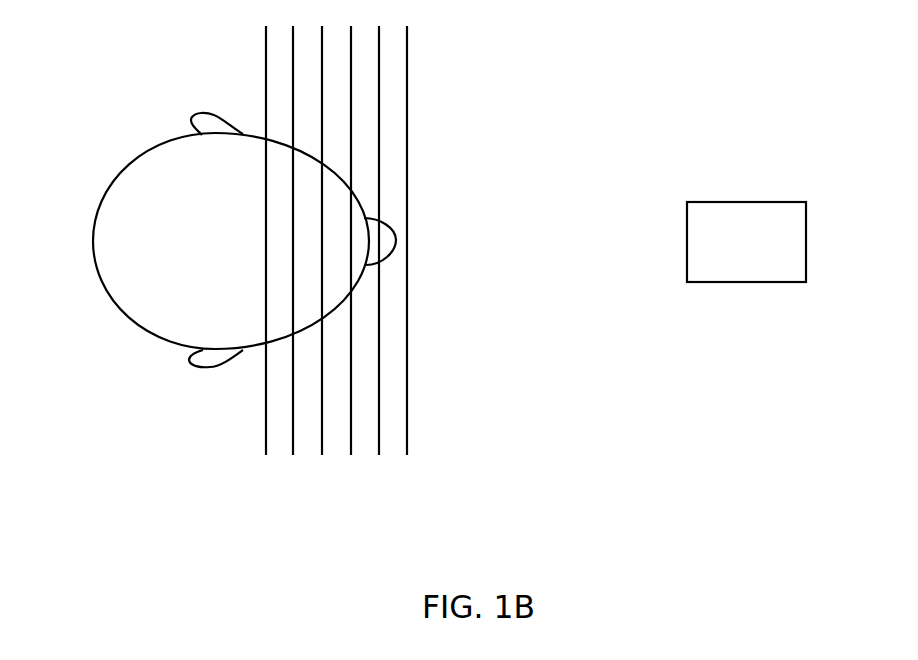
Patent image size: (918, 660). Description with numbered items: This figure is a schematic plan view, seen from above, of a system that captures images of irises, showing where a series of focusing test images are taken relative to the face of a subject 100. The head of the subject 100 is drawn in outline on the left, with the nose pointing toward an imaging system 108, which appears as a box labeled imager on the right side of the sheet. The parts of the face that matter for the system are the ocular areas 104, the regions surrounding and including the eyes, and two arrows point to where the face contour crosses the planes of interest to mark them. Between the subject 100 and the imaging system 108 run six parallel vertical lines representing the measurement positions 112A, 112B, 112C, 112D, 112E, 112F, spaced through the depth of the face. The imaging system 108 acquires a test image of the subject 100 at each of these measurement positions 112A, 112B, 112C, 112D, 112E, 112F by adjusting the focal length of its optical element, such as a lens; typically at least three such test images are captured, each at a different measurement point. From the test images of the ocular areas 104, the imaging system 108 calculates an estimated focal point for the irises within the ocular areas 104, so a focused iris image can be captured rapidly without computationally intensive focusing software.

The subject 100 is at (135, 152).
The ocular areas 104 is at (336, 284).
The imaging system 108 is at (747, 203).
The measurement position 112A is at (407, 438).
The measurement position 112B is at (379, 441).
The measurement position 112C is at (351, 441).
The measurement position 112D is at (322, 441).
The measurement position 112E is at (293, 441).
The measurement position 112F is at (266, 442).